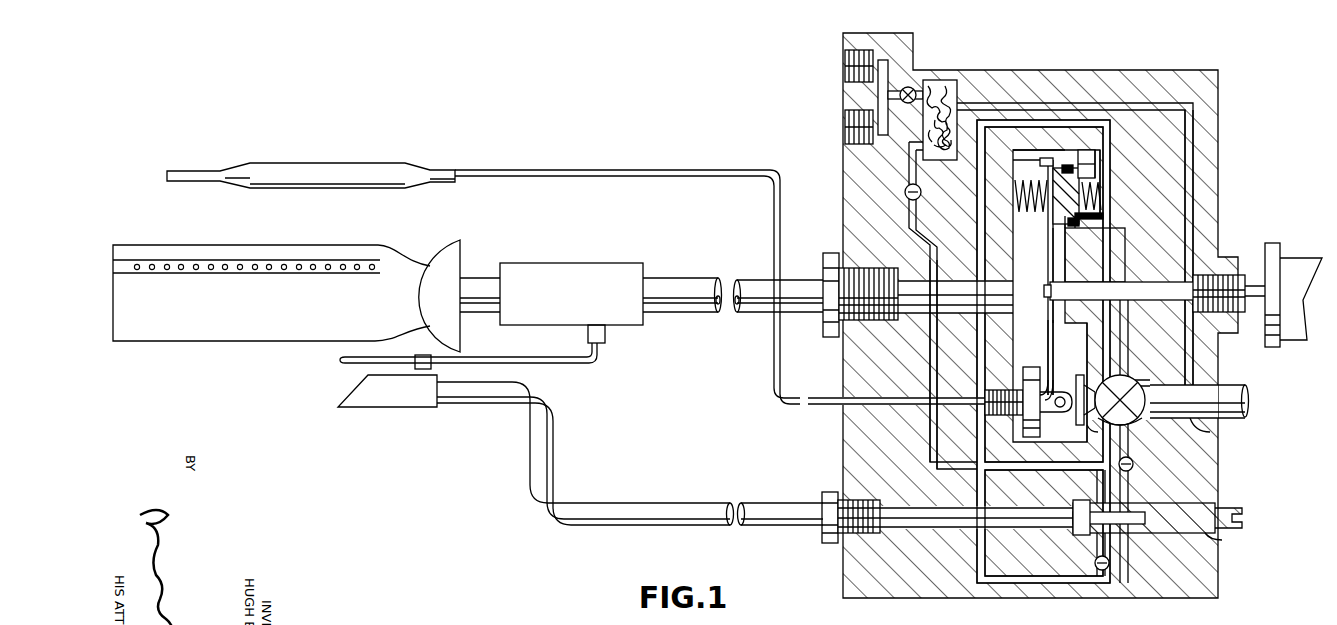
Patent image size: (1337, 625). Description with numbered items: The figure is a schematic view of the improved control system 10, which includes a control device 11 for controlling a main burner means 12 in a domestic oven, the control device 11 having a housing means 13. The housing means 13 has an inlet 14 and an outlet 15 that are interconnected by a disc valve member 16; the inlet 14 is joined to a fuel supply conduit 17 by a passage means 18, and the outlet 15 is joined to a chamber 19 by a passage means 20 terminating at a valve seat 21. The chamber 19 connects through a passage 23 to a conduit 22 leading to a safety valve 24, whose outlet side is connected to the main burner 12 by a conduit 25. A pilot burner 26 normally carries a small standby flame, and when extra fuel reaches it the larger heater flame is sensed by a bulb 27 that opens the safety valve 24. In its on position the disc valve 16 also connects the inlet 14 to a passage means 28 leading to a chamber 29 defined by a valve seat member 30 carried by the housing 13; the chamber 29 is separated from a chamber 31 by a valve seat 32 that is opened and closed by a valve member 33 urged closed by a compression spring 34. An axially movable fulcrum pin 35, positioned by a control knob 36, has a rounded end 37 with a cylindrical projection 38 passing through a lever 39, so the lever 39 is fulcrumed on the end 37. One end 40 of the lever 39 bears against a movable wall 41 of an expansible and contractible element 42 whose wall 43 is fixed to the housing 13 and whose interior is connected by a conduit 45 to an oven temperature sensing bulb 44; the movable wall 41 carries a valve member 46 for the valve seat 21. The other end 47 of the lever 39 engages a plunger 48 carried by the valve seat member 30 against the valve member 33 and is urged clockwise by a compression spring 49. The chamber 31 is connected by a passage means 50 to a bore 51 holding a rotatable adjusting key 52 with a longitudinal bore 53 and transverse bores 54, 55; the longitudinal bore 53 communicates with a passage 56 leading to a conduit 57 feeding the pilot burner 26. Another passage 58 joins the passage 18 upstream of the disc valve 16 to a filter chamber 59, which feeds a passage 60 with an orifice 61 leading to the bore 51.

The control system 10 is at (598, 86).
The control device 11 is at (1100, 40).
The main burner means 12 is at (214, 340).
The housing means 13 is at (845, 357).
The inlet 14 is at (1140, 418).
The outlet 15 is at (1096, 390).
The disc valve member 16 is at (1130, 380).
The fuel supply conduit 17 is at (1240, 387).
The passage means 18 is at (1212, 432).
The chamber 19 is at (1076, 344).
The passage means 20 is at (1126, 422).
The valve seat 21 is at (1080, 378).
The conduit 22 is at (700, 283).
The passage 23 is at (912, 320).
The safety valve 24 is at (578, 268).
The conduit 25 is at (478, 278).
The pilot burner 26 is at (388, 406).
The bulb 27 is at (346, 364).
The passage means 28 is at (1126, 258).
The chamber 29 is at (1070, 228).
The valve seat member 30 is at (1062, 210).
The chamber 31 is at (1104, 218).
The valve seat 32 is at (1088, 174).
The valve member 33 is at (1102, 200).
The compression spring 34 is at (1102, 180).
The fulcrum pin 35 is at (1147, 300).
The control knob 36 is at (1300, 262).
The rounded end 37 is at (1050, 282).
The cylindrical projection 38 is at (1049, 300).
The lever 39 is at (1056, 266).
The end of lever 40 is at (1049, 368).
The movable wall 41 is at (1042, 420).
The expansible and contractible element 42 is at (1024, 375).
The wall 43 is at (1022, 424).
The oven temperature sensing bulb 44 is at (332, 163).
The conduit 45 is at (606, 176).
The valve member 46 is at (1088, 430).
The end of lever 47 is at (1035, 160).
The plunger 48 is at (1050, 174).
The compression spring 49 is at (1016, 196).
The passage means 50 is at (978, 228).
The bore 51 is at (1222, 540).
The adjusting key 52 is at (1218, 505).
The longitudinal bore 53 is at (1073, 530).
The transverse bore 54 is at (1135, 534).
The transverse bore 55 is at (1096, 500).
The passage 56 is at (940, 520).
The conduit 57 is at (680, 510).
The passage 58 is at (1219, 176).
The filter chamber 59 is at (960, 92).
The passage 60 is at (929, 364).
The orifice 61 is at (905, 190).